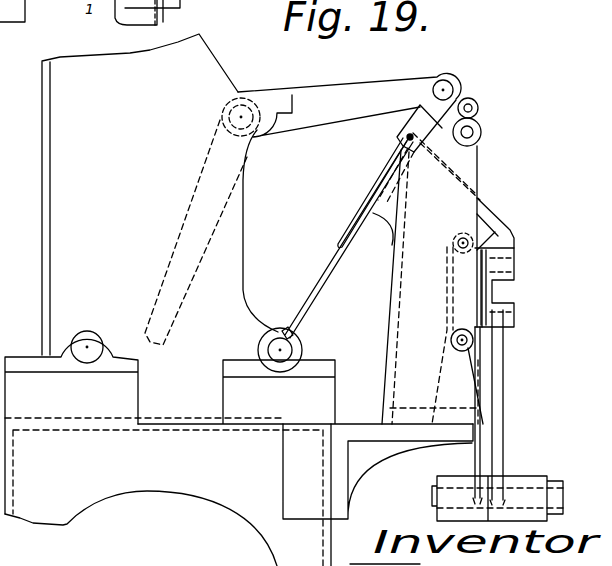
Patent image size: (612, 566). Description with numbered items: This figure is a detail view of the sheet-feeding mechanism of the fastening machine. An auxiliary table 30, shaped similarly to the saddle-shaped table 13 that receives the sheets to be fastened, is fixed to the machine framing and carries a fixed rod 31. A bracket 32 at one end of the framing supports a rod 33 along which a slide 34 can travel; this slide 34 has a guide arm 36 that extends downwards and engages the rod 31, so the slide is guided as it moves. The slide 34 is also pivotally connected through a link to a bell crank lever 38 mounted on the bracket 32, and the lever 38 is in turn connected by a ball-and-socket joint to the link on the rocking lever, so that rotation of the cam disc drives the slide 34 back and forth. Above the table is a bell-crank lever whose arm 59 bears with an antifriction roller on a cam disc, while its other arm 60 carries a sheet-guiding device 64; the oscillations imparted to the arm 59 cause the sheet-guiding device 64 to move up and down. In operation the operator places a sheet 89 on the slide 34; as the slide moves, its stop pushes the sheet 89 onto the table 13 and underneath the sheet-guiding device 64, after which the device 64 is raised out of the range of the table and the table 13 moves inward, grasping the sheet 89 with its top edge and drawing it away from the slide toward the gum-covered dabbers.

The saddle-shaped table 13 is at (447, 182).
The auxiliary table 30 is at (337, 257).
The rod 31 is at (470, 340).
The bracket 32 is at (478, 156).
The rod 33 is at (456, 243).
The slide 34 is at (477, 195).
The guide arm 36 is at (467, 298).
The bell crank lever 38 is at (503, 371).
The arm 59 is at (200, 168).
The arm 60 is at (352, 92).
The sheet-guiding device 64 is at (418, 118).
The sheet 89 is at (372, 200).